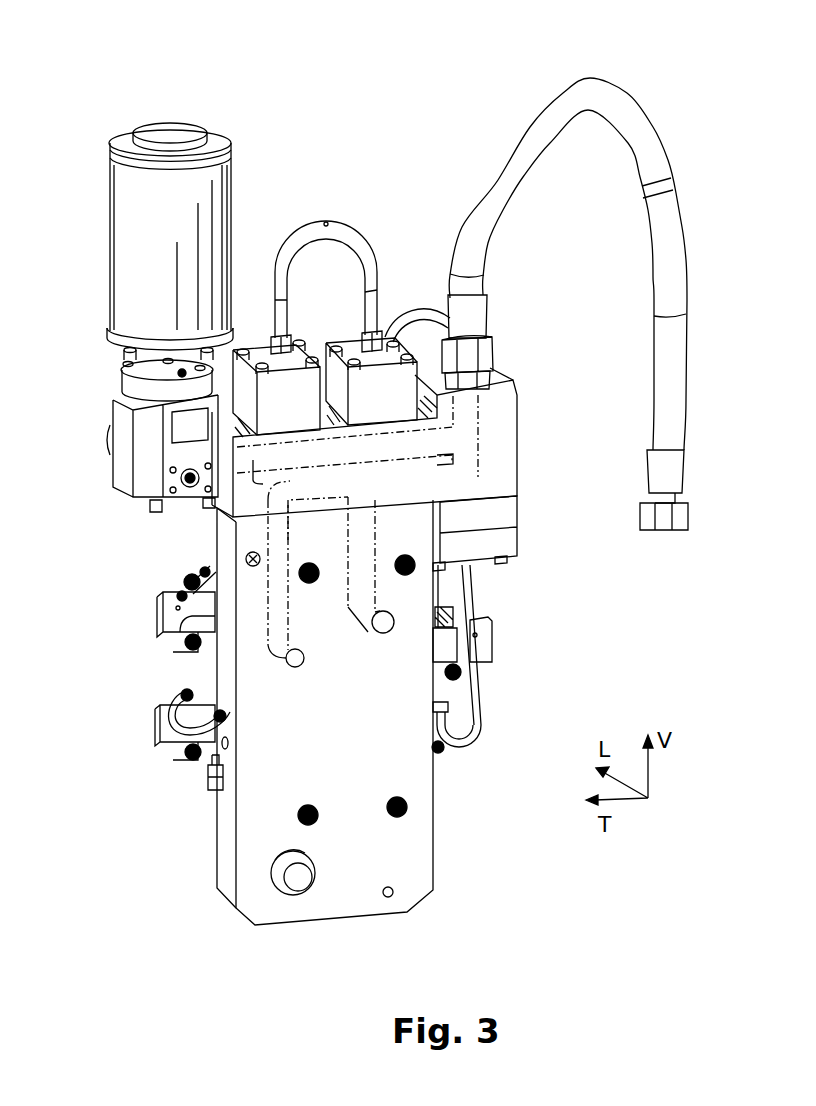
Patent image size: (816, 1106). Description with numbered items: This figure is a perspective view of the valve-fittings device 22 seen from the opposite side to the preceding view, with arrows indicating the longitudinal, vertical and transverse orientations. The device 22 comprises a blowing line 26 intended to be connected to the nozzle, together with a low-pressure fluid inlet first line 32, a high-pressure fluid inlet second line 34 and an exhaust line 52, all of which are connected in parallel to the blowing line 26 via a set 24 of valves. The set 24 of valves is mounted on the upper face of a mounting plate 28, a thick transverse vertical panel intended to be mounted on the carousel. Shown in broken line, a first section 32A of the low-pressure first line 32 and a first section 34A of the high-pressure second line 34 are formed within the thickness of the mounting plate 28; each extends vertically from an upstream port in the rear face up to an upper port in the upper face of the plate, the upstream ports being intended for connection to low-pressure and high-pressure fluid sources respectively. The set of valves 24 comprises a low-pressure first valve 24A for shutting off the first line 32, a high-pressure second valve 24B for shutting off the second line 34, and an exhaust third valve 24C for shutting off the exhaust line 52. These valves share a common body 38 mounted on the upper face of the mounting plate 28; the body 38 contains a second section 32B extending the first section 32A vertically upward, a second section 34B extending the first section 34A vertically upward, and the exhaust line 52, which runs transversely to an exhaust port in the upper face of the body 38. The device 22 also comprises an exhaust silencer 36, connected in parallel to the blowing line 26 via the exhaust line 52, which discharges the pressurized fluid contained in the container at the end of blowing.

The valve-fittings device 22 is at (388, 146).
The set of valves 24 is at (526, 435).
The low-pressure first valve 24A is at (258, 317).
The high-pressure second valve 24B is at (384, 312).
The exhaust third valve 24C is at (512, 540).
The blowing line 26 is at (603, 95).
The mounting plate 28 is at (407, 852).
The low-pressure fluid inlet first line 32 is at (260, 605).
The first section of the low-pressure first line 32A is at (285, 653).
The second section of the low-pressure line 32B is at (309, 500).
The high-pressure fluid inlet second line 34 is at (362, 545).
The first section of the high-pressure second line 34A is at (370, 607).
The second section of the high-pressure line 34B is at (367, 503).
The exhaust silencer 36 is at (121, 271).
The common body 38 is at (495, 414).
The exhaust line 52 is at (182, 486).